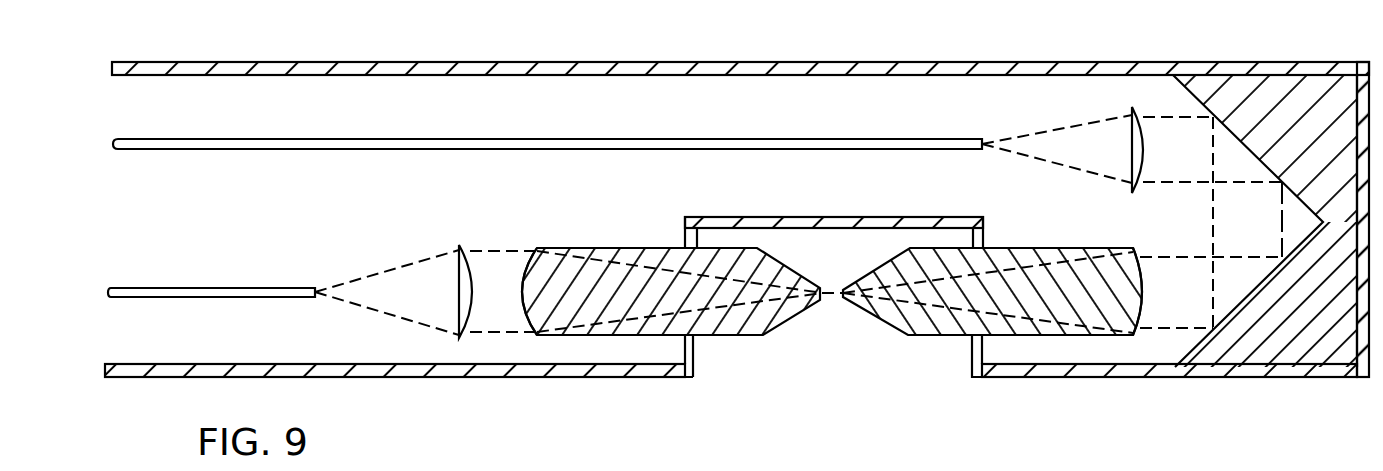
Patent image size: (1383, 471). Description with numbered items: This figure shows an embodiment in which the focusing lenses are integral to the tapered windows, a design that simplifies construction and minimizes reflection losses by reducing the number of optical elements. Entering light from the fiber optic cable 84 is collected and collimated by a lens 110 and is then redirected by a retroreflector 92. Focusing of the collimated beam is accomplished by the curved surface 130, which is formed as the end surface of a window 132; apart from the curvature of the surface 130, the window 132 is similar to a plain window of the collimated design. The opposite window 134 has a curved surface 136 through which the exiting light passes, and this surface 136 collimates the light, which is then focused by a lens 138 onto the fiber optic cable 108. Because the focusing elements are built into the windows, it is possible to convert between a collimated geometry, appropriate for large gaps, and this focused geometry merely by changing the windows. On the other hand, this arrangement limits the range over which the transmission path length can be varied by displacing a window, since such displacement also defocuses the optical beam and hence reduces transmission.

The fiber optic cable 84 is at (672, 148).
The retroreflector 92 is at (1262, 128).
The fiber optic cable 108 is at (287, 295).
The lens 110 is at (1140, 148).
The curved surface 130 is at (1145, 330).
The window 132 is at (947, 336).
The window 134 is at (634, 336).
The curved surface 136 is at (530, 325).
The lens 138 is at (453, 315).